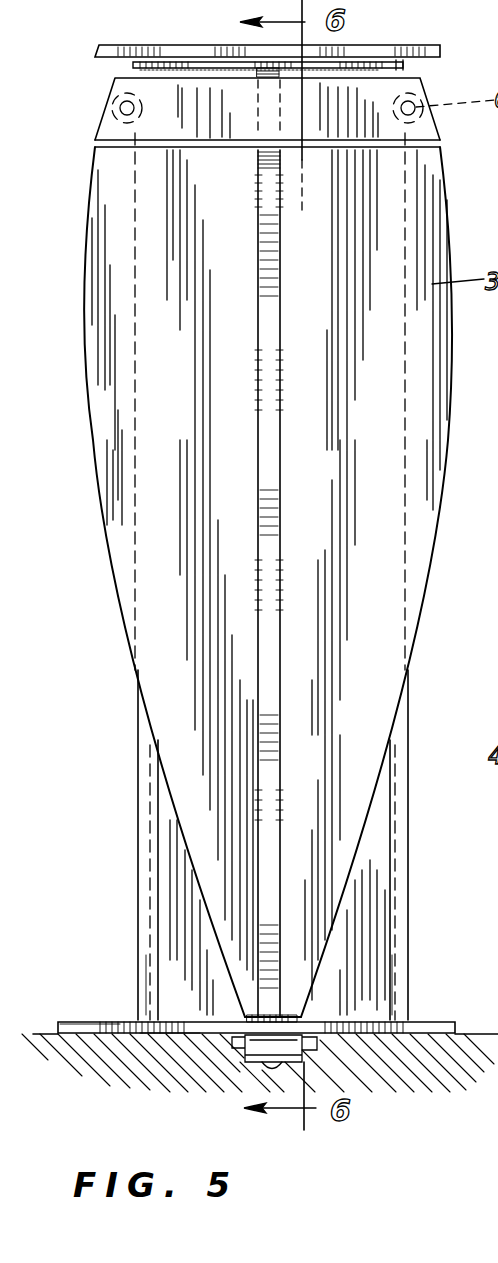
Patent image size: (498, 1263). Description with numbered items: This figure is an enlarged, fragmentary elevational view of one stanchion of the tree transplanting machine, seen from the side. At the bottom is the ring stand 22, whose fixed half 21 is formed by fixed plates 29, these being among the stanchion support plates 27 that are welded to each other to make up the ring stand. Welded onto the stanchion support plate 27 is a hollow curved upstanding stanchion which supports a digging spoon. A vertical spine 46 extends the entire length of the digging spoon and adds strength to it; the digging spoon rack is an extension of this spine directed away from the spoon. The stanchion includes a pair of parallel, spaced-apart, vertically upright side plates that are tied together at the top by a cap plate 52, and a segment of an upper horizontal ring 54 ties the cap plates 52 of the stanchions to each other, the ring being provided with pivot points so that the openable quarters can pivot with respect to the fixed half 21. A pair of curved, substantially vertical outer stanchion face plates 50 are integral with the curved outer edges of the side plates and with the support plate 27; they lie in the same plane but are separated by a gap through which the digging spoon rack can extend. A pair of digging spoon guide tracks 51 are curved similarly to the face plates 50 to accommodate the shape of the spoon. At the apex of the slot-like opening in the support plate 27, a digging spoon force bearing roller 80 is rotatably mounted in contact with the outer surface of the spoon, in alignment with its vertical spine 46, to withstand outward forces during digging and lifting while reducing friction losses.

The fixed half 21 is at (180, 1034).
The ring stand 22 is at (80, 1021).
The stanchion support plate 27 is at (432, 1021).
The fixed plate 29 is at (117, 1020).
The vertical spine 46 is at (275, 786).
The outer stanchion face plate 50 is at (196, 61).
The digging spoon guide track 51 is at (133, 67).
The cap plate 52 is at (405, 62).
The upper horizontal ring 54 is at (395, 46).
The digging spoon force bearing roller 80 is at (245, 1061).